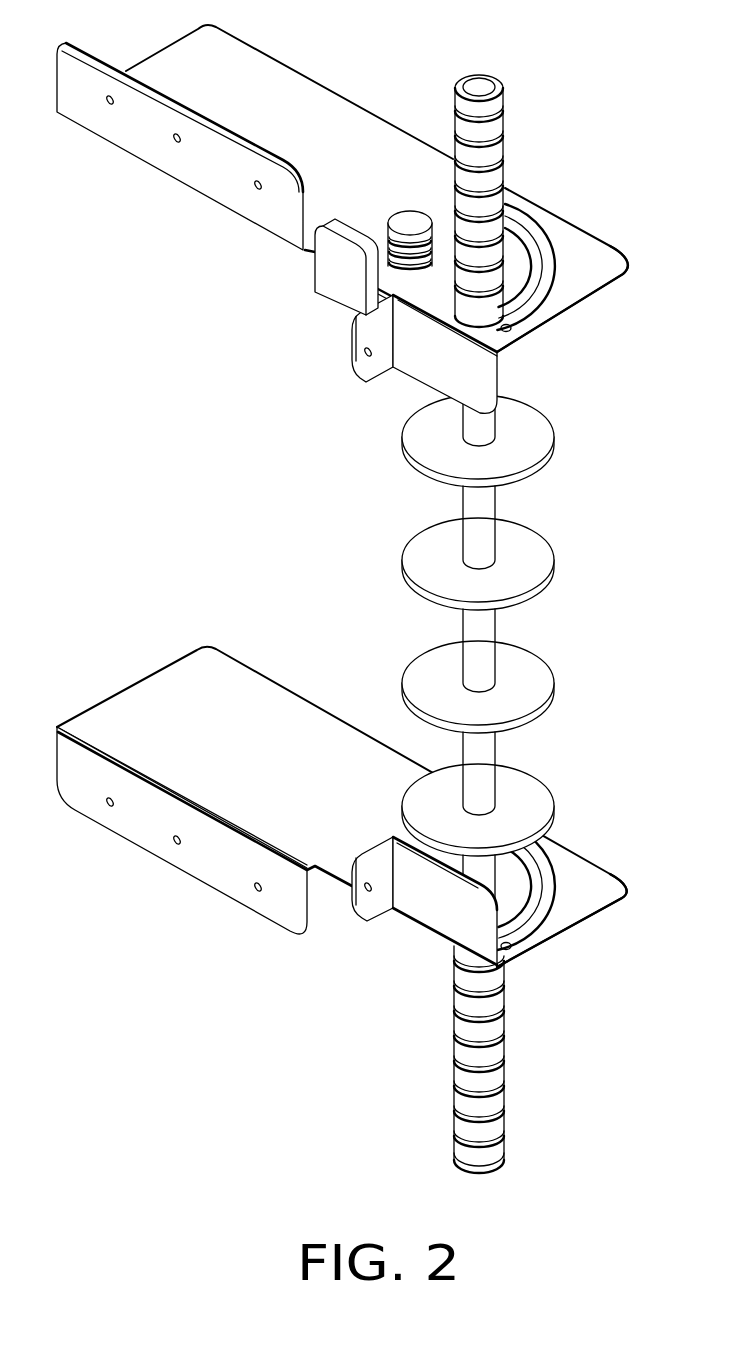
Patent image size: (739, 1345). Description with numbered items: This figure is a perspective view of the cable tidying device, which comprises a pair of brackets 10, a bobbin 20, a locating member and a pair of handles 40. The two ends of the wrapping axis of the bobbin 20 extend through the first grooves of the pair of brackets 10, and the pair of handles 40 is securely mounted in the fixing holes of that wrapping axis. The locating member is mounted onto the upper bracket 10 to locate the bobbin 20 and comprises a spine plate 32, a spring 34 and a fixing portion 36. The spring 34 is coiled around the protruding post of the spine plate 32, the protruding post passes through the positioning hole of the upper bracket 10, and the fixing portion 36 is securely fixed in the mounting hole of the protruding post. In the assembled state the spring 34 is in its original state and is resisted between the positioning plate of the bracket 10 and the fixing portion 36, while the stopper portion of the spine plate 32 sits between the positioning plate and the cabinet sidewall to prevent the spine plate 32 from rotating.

The bracket 10 is at (268, 97).
The bobbin 20 is at (528, 565).
The spine plate 32 is at (328, 270).
The spring 34 is at (378, 302).
The fixing portion 36 is at (408, 217).
The handle 40 is at (487, 140).